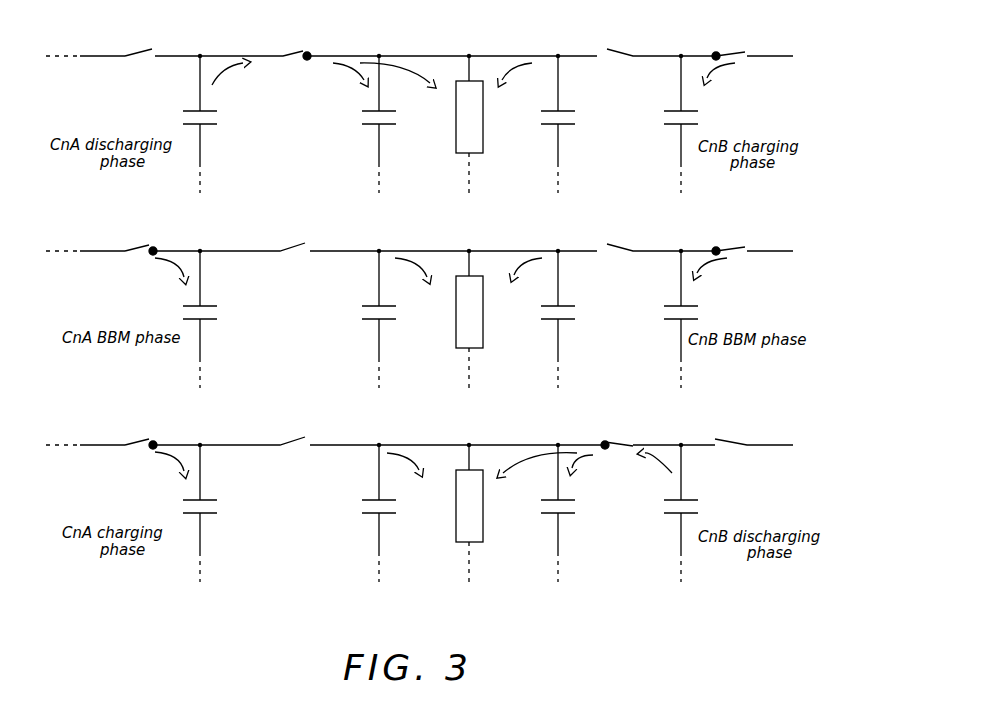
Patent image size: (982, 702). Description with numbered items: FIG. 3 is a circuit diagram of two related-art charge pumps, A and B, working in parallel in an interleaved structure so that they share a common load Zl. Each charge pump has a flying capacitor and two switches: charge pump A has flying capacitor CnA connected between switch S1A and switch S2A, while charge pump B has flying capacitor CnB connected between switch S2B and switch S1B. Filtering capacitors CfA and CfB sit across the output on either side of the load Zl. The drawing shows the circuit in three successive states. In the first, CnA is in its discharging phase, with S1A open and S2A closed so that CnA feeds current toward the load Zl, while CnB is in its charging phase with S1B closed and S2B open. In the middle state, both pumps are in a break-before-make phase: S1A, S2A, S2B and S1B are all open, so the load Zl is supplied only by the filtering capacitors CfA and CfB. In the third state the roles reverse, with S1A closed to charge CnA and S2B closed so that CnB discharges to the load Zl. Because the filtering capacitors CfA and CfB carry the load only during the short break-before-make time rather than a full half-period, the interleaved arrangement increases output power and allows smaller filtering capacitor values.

The switch S1A is at (156, 241).
The switch S2A is at (289, 239).
The flying capacitor CnA is at (220, 319).
The filtering capacitor CfA is at (397, 319).
The load Zl is at (479, 319).
The filtering capacitor CfB is at (577, 319).
The flying capacitor CnB is at (702, 319).
The switch S2B is at (639, 240).
The switch S1B is at (737, 236).